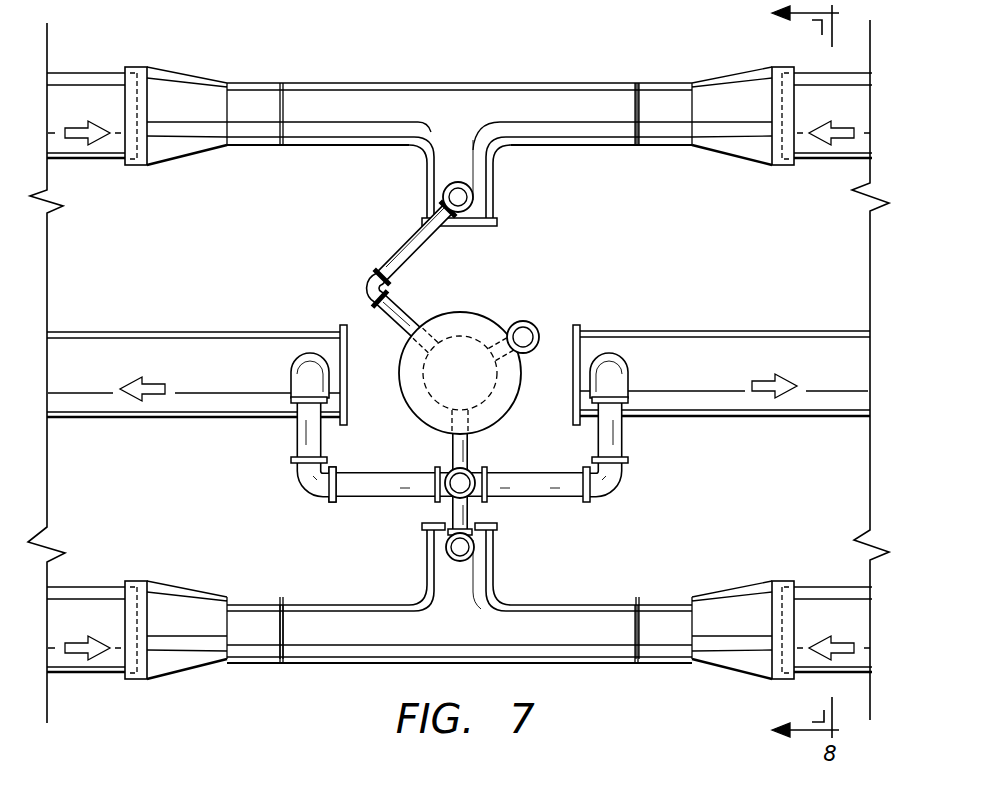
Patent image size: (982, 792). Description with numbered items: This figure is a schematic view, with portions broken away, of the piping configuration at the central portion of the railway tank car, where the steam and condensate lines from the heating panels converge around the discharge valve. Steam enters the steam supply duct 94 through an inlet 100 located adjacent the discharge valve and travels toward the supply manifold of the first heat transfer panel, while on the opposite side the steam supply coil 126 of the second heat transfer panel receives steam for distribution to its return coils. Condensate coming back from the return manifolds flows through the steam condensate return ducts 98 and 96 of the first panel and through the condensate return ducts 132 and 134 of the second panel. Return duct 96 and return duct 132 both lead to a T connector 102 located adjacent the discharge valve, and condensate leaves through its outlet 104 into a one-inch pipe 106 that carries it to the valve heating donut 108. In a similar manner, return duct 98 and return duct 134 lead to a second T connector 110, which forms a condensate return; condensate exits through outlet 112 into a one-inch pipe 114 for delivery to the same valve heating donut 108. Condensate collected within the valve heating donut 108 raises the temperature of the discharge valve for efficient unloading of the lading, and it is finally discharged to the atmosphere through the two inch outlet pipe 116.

The steam supply duct 94 is at (838, 340).
The steam condensate return duct 96 is at (805, 587).
The steam condensate return duct 98 is at (803, 157).
The inlet 100 is at (628, 373).
The T connector 102 is at (316, 665).
The outlet 104 is at (475, 547).
The one-inch pipe 106 is at (452, 508).
The valve heating donut 108 is at (458, 312).
The second T connector 110 is at (460, 83).
The outlet 112 is at (473, 200).
The one-inch pipe 114 is at (403, 243).
The two inch outlet pipe 116 is at (525, 322).
The steam supply coil 126 is at (235, 343).
The condensate return duct 132 is at (92, 675).
The condensate return duct 134 is at (90, 77).